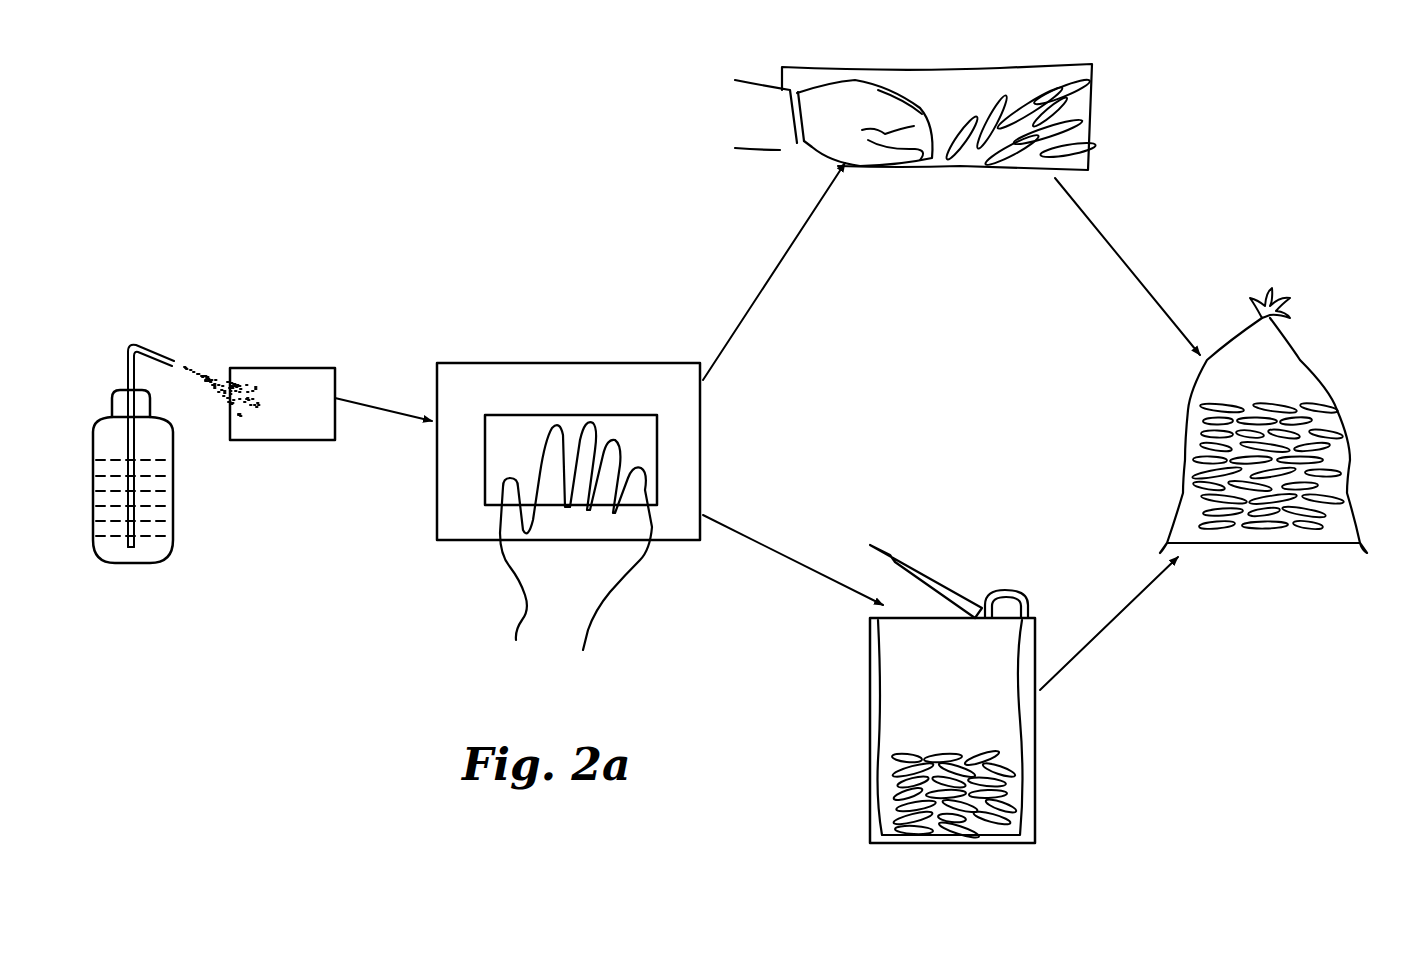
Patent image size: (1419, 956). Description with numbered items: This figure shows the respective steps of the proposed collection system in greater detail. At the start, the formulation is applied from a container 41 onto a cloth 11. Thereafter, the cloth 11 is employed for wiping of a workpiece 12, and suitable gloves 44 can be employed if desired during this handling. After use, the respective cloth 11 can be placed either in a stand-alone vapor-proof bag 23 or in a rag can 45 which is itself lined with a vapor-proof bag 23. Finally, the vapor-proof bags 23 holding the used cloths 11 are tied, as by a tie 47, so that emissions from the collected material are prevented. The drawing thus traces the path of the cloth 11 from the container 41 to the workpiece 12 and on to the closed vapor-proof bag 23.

The cloth 11 is at (290, 428).
The workpiece 12 is at (560, 380).
The vapor-proof bag 23 is at (965, 90).
The container 41 is at (172, 517).
The gloves 44 is at (512, 632).
The rag can 45 is at (975, 848).
The tie 47 is at (1283, 303).